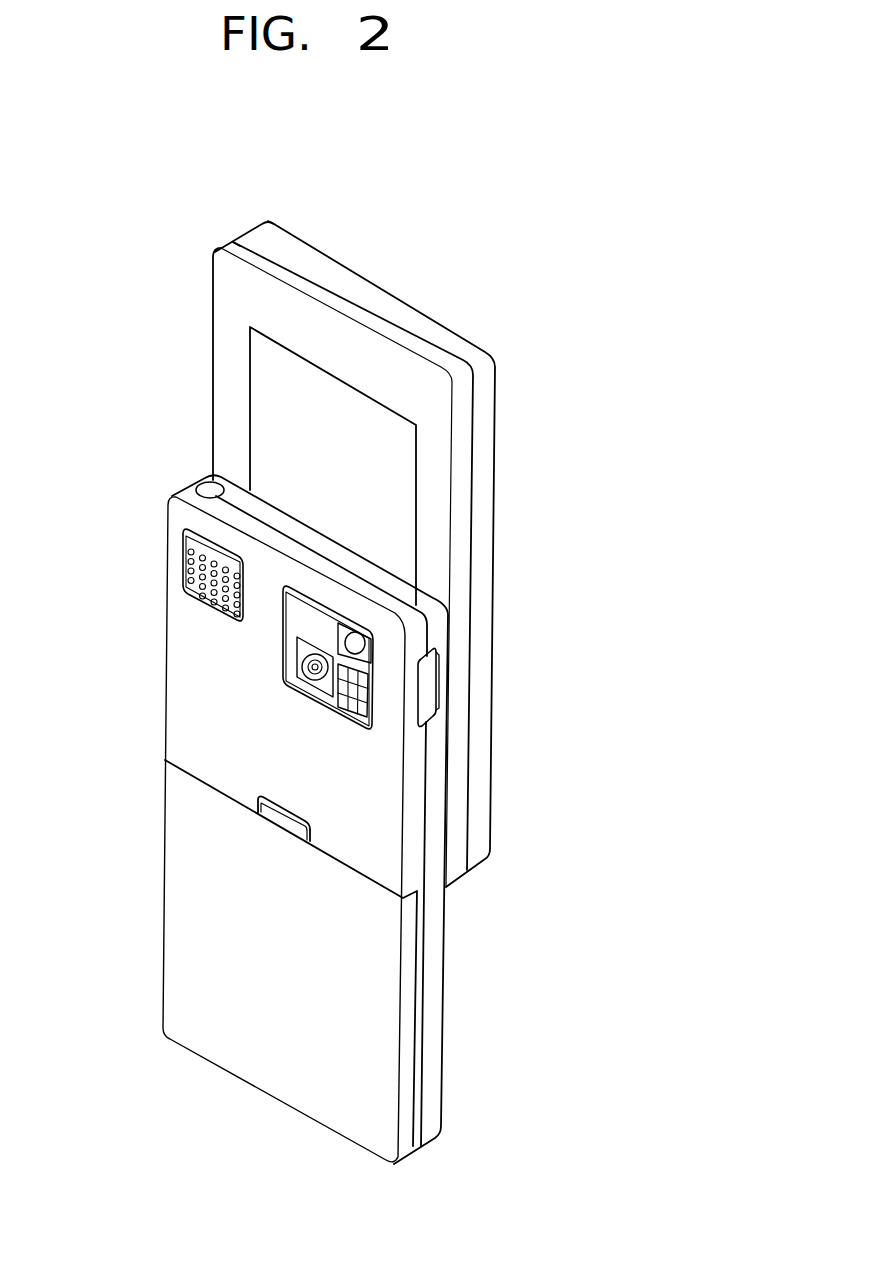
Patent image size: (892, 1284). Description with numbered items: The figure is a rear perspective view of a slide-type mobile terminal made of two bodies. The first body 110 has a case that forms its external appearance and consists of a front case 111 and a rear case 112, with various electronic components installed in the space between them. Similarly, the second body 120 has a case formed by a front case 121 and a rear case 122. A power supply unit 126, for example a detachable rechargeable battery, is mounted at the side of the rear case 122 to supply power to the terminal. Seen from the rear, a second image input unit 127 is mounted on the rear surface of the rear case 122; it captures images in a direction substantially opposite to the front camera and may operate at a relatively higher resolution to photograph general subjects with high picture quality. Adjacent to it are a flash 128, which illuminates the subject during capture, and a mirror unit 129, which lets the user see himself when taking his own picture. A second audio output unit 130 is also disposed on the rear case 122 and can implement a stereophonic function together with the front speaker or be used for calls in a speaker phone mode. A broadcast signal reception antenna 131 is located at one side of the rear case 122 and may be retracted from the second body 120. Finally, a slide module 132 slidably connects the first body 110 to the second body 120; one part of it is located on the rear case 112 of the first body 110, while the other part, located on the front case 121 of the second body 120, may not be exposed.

The first body 110 is at (290, 531).
The front case 111 is at (258, 232).
The rear case 112 is at (243, 246).
The second body 120 is at (316, 803).
The front case 121 is at (437, 915).
The rear case 122 is at (413, 857).
The power supply unit 126 is at (178, 848).
The second image input unit 127 is at (317, 668).
The flash 128 is at (433, 710).
The mirror unit 129 is at (357, 642).
The second audio output unit 130 is at (193, 568).
The broadcast signal reception antenna 131 is at (204, 489).
The slide module 132 is at (250, 436).